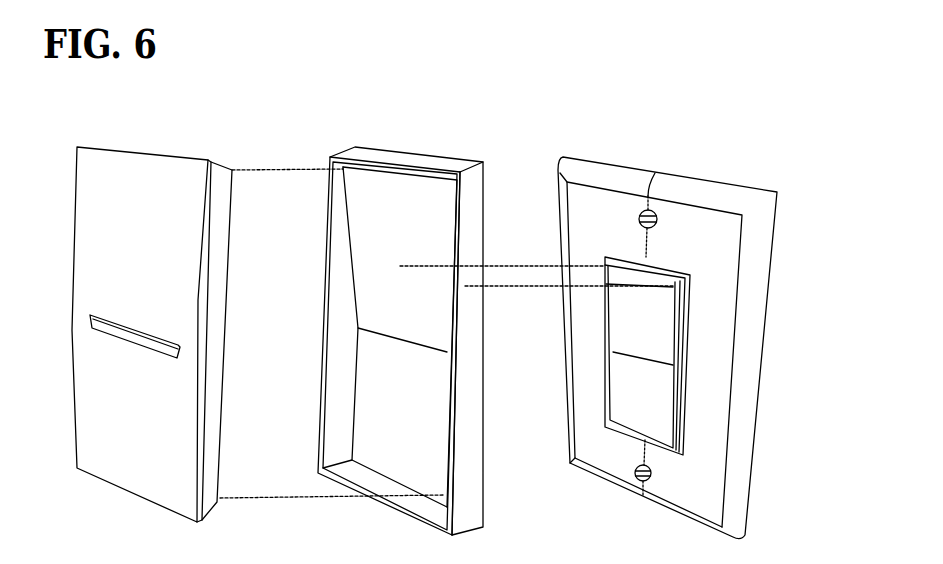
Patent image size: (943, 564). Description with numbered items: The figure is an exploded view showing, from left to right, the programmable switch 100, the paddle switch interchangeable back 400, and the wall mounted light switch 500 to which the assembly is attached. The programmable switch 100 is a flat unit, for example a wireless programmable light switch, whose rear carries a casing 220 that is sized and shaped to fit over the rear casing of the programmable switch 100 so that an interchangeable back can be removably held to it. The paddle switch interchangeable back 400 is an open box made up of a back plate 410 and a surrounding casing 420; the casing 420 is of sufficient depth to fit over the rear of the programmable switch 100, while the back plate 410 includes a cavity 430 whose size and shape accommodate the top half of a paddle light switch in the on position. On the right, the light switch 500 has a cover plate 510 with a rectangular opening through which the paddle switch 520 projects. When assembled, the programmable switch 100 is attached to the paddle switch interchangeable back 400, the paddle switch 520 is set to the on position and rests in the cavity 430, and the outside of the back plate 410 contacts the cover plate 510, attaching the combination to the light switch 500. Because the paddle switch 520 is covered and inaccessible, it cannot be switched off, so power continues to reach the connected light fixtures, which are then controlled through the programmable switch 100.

The programmable switch 100 is at (157, 313).
The casing 220 is at (222, 258).
The paddle switch interchangeable back 400 is at (406, 321).
The back plate 410 is at (467, 358).
The casing 420 is at (370, 407).
The cavity 430 is at (440, 260).
The switch wall plate 500 is at (684, 319).
The plate front surface 510 is at (755, 290).
The switch opening / toggle paddle 520 is at (677, 348).